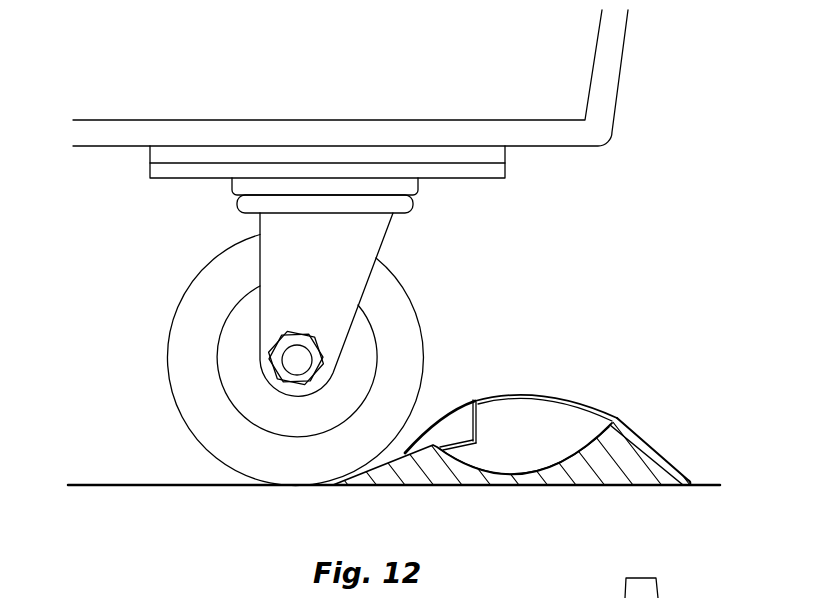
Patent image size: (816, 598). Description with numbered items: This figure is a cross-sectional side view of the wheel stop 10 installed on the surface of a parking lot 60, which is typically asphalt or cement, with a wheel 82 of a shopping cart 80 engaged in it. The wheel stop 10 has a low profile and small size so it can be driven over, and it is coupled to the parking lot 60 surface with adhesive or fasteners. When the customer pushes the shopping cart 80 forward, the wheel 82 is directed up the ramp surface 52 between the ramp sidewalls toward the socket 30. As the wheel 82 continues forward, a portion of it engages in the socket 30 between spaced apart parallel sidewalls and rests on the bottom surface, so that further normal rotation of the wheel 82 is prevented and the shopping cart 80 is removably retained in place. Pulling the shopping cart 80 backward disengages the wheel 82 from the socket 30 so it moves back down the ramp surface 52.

The shopping cart 80 is at (610, 50).
The wheel 82 is at (177, 313).
The parking lot 60 is at (152, 485).
The wheel stop 10 is at (657, 405).
The socket 30 is at (560, 422).
The ramp surface 52 is at (398, 453).